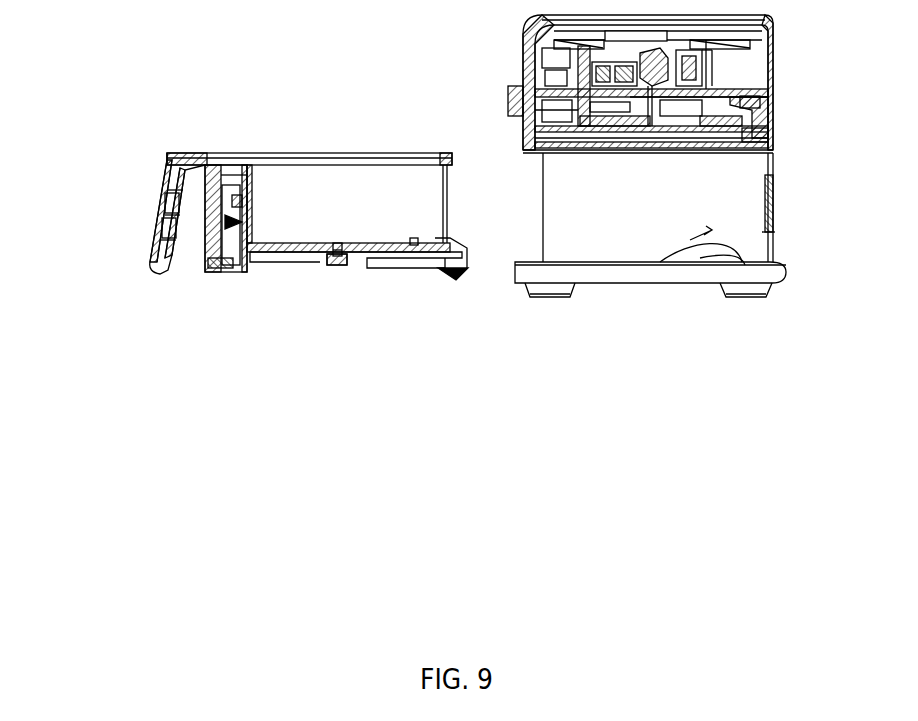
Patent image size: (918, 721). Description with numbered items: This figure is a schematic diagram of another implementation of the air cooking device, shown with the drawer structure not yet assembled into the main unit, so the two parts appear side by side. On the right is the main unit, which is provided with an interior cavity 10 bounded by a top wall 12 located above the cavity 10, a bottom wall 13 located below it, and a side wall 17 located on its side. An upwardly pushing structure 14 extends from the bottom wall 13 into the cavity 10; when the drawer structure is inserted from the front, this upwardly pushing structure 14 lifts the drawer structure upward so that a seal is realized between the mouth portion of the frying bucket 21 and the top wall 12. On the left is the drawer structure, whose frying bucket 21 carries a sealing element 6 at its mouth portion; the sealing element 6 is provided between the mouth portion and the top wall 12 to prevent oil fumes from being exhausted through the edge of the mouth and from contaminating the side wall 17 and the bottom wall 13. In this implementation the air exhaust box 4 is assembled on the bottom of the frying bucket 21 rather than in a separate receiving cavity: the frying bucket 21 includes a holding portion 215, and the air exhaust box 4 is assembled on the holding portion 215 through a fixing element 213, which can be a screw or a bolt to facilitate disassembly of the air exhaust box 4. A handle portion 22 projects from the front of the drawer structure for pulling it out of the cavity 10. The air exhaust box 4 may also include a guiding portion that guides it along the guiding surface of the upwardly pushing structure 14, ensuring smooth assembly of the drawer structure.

The air exhaust box 4 is at (457, 280).
The sealing element 6 is at (368, 153).
The cavity 10 is at (733, 188).
The top wall 12 is at (732, 130).
The bottom wall 13 is at (630, 264).
The upwardly pushing structure 14 is at (727, 256).
The side wall 17 is at (765, 216).
The frying bucket 21 is at (218, 218).
The handle 22 is at (165, 190).
The fixing element 213 is at (346, 258).
The holding portion 215 is at (316, 264).